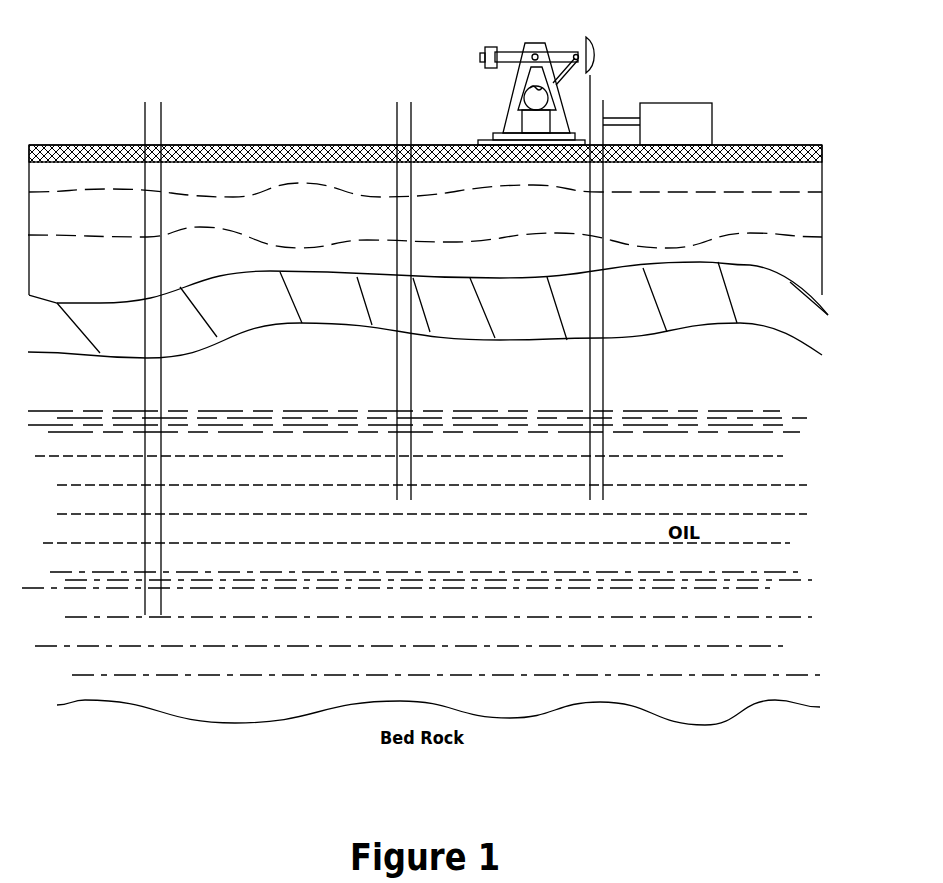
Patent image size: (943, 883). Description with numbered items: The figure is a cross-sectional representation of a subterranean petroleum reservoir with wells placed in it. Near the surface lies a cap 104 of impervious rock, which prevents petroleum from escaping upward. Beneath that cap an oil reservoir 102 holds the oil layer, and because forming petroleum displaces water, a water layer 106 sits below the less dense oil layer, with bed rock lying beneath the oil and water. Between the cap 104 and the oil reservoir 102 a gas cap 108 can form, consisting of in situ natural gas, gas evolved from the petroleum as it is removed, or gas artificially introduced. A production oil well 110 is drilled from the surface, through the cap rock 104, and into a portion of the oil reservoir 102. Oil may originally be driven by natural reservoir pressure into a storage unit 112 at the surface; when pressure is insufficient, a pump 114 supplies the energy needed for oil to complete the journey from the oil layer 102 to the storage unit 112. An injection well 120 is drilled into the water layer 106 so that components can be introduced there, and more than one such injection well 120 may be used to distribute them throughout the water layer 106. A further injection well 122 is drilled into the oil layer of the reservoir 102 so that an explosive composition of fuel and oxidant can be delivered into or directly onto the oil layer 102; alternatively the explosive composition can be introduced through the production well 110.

The oil reservoir 102 is at (421, 499).
The cap 104 is at (428, 310).
The water layer 106 is at (421, 623).
The gas cap 108 is at (417, 401).
The production oil well 110 is at (603, 88).
The storage unit 112 is at (657, 124).
The pump 114 is at (512, 36).
The injection well 120 is at (153, 68).
The injection well 122 is at (405, 68).